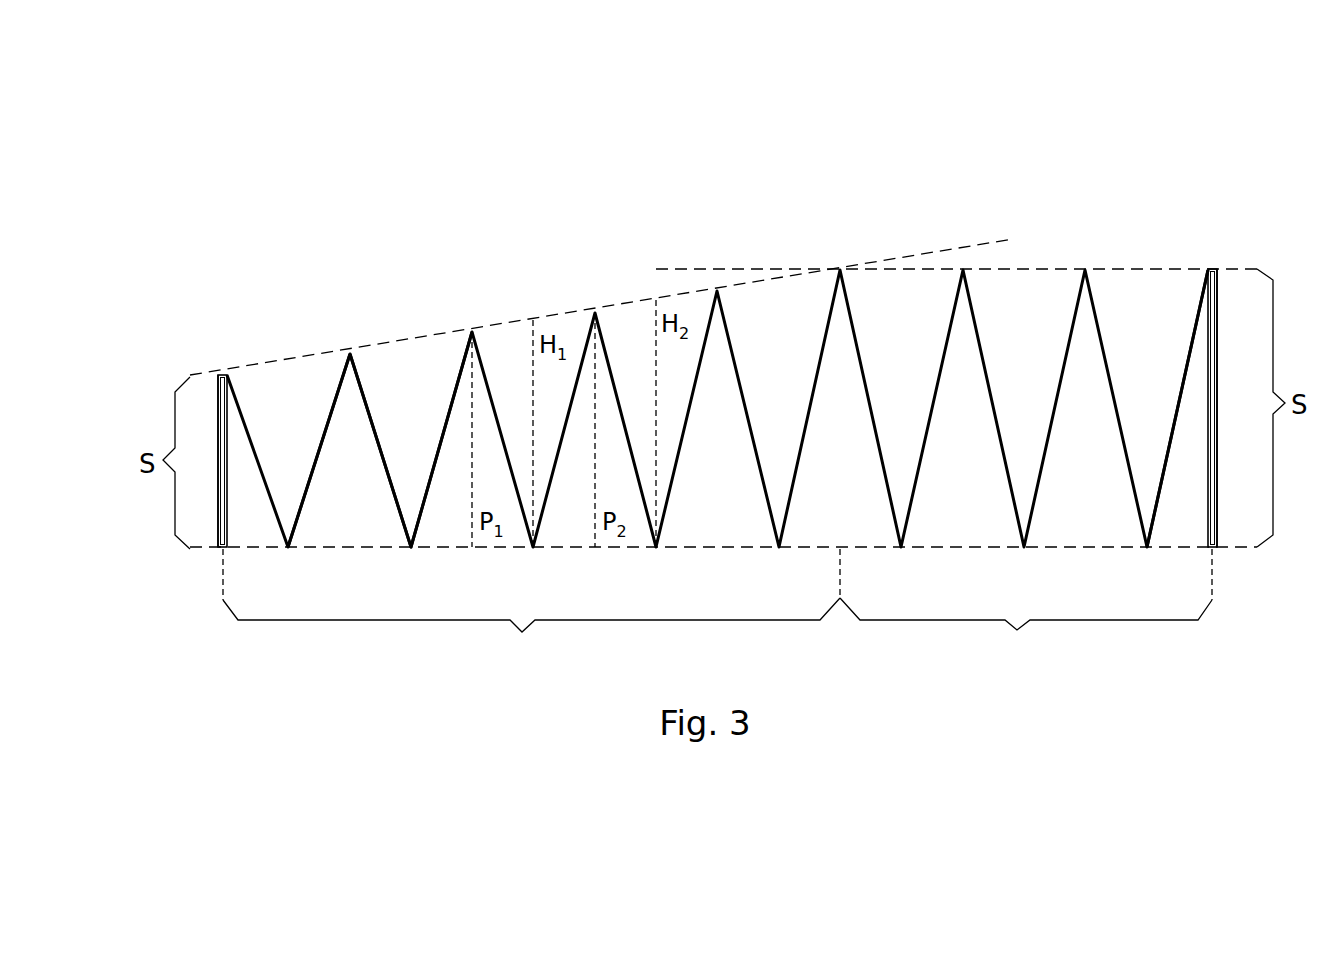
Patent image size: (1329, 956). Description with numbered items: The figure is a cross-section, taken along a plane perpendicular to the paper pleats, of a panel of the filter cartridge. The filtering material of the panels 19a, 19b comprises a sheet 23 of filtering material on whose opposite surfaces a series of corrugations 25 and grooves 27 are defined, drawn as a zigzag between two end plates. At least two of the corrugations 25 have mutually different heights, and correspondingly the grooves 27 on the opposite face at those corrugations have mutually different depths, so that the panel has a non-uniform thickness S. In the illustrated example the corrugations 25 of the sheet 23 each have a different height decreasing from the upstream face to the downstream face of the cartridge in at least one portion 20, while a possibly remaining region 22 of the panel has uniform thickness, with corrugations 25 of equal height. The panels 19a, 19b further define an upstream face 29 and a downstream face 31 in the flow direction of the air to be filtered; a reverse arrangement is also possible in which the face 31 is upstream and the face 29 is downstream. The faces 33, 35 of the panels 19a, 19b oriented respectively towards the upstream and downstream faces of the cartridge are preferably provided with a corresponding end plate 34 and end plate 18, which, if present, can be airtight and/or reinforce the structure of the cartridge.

The end plate 18 is at (218, 414).
The panel 19a is at (717, 275).
The panel 19b is at (618, 172).
The portion 20 is at (531, 606).
The remaining region 22 is at (1026, 606).
The sheet of filtering material 23 is at (1198, 317).
The corrugations 25 is at (320, 421).
The grooves 27 is at (407, 411).
The upstream face 29 is at (514, 320).
The downstream face 31 is at (982, 541).
The face 33 is at (1219, 299).
The end plate 34 is at (1217, 497).
The face 35 is at (214, 513).